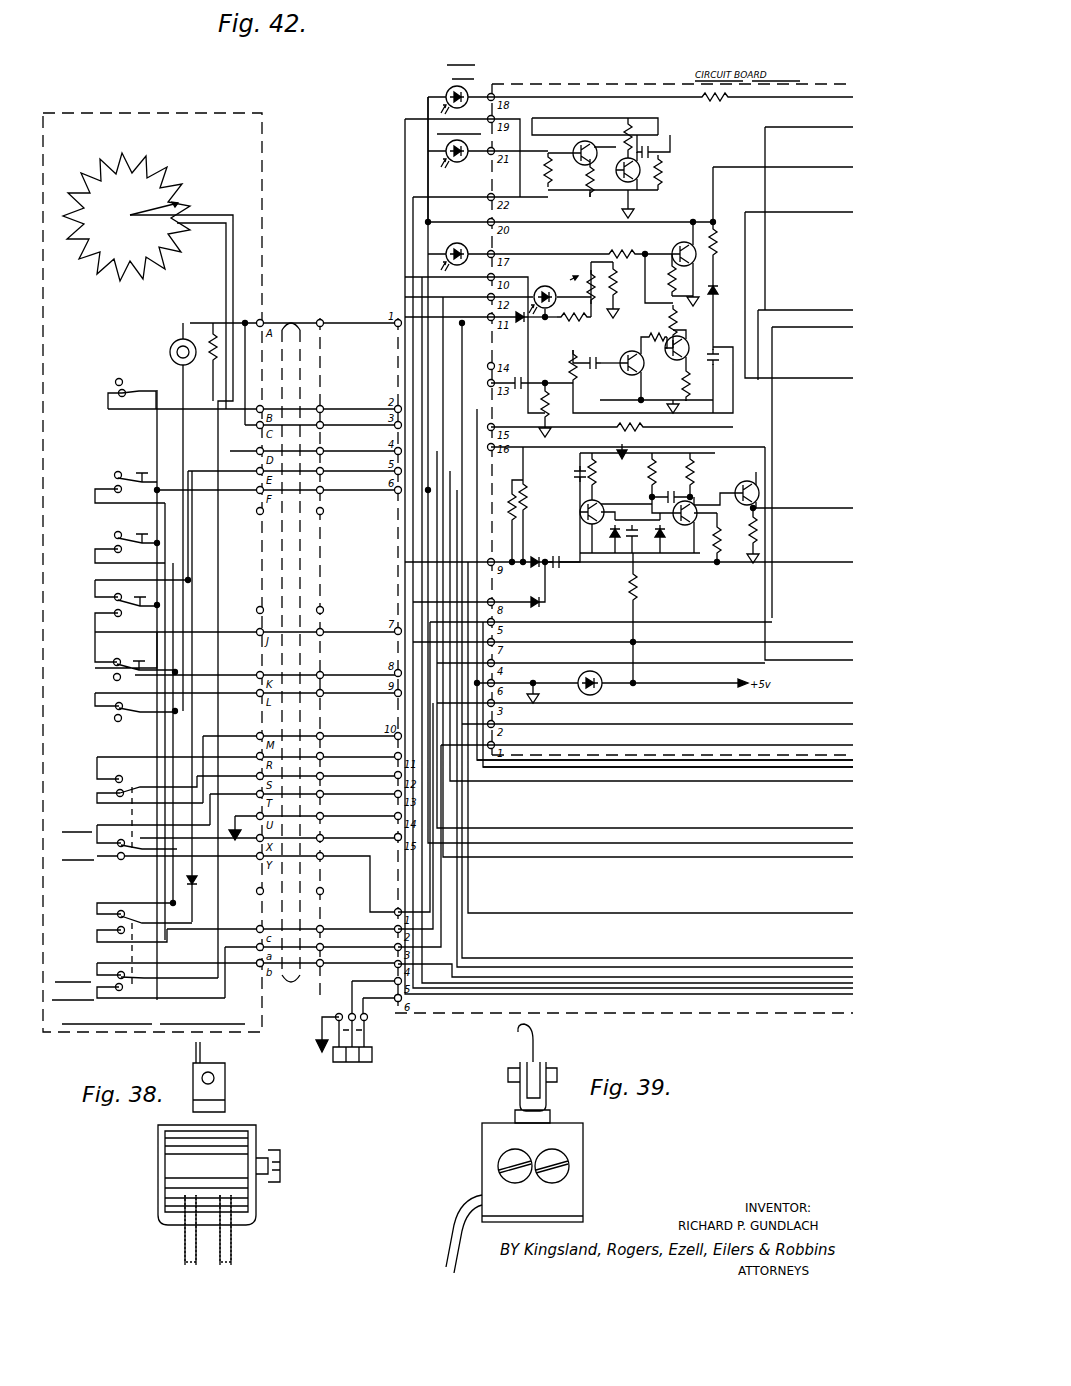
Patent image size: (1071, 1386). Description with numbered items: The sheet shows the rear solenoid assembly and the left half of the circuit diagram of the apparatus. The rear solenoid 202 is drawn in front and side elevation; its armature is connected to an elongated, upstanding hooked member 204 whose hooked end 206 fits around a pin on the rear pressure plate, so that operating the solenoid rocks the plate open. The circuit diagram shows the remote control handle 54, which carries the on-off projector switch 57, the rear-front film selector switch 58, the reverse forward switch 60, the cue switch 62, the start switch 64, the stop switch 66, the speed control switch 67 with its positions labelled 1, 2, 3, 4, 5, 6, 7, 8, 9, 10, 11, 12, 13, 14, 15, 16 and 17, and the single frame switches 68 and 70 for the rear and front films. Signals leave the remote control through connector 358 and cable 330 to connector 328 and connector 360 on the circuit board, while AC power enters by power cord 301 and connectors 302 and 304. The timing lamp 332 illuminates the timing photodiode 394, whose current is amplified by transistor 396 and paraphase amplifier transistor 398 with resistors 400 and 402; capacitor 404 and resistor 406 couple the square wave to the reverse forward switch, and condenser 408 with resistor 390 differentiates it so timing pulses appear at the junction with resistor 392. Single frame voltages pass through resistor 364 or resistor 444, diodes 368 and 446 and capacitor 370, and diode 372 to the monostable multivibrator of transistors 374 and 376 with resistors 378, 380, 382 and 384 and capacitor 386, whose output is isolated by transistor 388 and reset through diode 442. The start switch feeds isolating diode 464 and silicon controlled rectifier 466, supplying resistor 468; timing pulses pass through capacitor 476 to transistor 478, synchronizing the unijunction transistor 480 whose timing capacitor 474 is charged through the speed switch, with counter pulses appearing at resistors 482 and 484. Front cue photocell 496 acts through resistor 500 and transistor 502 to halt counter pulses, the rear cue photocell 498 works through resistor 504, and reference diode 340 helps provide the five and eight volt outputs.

In FIG. 42, the wheel contact 1 is at (185, 198).
In FIG. 42, the wheel contact 2 is at (175, 182).
In FIG. 42, the wheel contact 3 is at (158, 160).
In FIG. 42, the wheel contact 4 is at (144, 156).
In FIG. 42, the wheel contact 5 is at (118, 155).
In FIG. 42, the wheel contact 6 is at (100, 160).
In FIG. 42, the wheel contact 7 is at (78, 178).
In FIG. 42, the wheel contact 8 is at (68, 194).
In FIG. 42, the wheel contact 9 is at (67, 220).
In FIG. 42, the wheel contact 10 is at (70, 244).
In FIG. 42, the wheel contact 11 is at (82, 262).
In FIG. 42, the wheel contact 12 is at (100, 275).
In FIG. 42, the wheel contact 13 is at (118, 282).
In FIG. 42, the wheel contact 14 is at (142, 280).
In FIG. 42, the wheel contact 15 is at (164, 272).
In FIG. 42, the wheel contact 16 is at (178, 254).
In FIG. 42, the wheel contact 17 is at (190, 234).
In FIG. 42, the speed control switch 67 is at (166, 150).
In FIG. 42, the timing lamp 332 is at (168, 342).
In FIG. 42, the cue switch 62 is at (131, 392).
In FIG. 42, the single front switch 70 is at (115, 476).
In FIG. 42, the single rear switch 68 is at (112, 548).
In FIG. 42, the start switch 64 is at (125, 610).
In FIG. 42, the stop switch 66 is at (125, 672).
In FIG. 42, the on-off projector switch 57 is at (128, 714).
In FIG. 42, the reverse forward switch 60 is at (132, 860).
In FIG. 42, the rear-front film selector switch 58 is at (125, 954).
In FIG. 42, the remote control handle 54 is at (232, 1000).
In FIG. 42, the connector 358 is at (257, 968).
In FIG. 42, the cable 330 is at (286, 978).
In FIG. 42, the connector 302 is at (350, 1012).
In FIG. 42, the power cord 301 is at (374, 1048).
In FIG. 42, the connector 304 is at (406, 1004).
In FIG. 42, the connector 328 is at (398, 848).
In FIG. 42, the connector 360 is at (492, 758).
In FIG. 42, the reference diode 340 is at (604, 688).
In FIG. 42, the rear cue photocell 498 is at (446, 92).
In FIG. 42, the resistor 504 is at (726, 102).
In FIG. 42, the timing photodiode 394 is at (466, 162).
In FIG. 42, the front cue photocell 496 is at (470, 250).
In FIG. 42, the amplifier transistor 396 is at (603, 155).
In FIG. 42, the resistor 400 is at (626, 132).
In FIG. 42, the resistor 402 is at (629, 162).
In FIG. 42, the paraphase amplifier transistor 398 is at (578, 177).
In FIG. 42, the capacitor 404 is at (655, 148).
In FIG. 42, the resistor 406 is at (660, 192).
In FIG. 42, the resistor 500 is at (608, 252).
In FIG. 42, the amplifier transistor 502 is at (692, 236).
In FIG. 42, the timing capacitor 474 is at (718, 356).
In FIG. 42, the silicon controlled rectifier 466 is at (571, 289).
In FIG. 42, the isolating diode 464 is at (524, 323).
In FIG. 42, the resistor 468 is at (606, 310).
In FIG. 42, the resistor 392 is at (573, 372).
In FIG. 42, the capacitor 476 is at (604, 355).
In FIG. 42, the amplifier transistor 478 is at (643, 360).
In FIG. 42, the unijunction transistor 480 is at (682, 336).
In FIG. 42, the resistor 482 is at (684, 392).
In FIG. 42, the resistor 484 is at (658, 408).
In FIG. 42, the condenser 408 is at (528, 389).
In FIG. 42, the resistor 390 is at (538, 415).
In FIG. 42, the resistor 444 is at (528, 492).
In FIG. 42, the resistor 364 is at (527, 505).
In FIG. 42, the diode 368 is at (538, 558).
In FIG. 42, the capacitor 370 is at (558, 570).
In FIG. 42, the diode 446 is at (542, 606).
In FIG. 42, the resistor 378 is at (598, 472).
In FIG. 42, the transistor 374 is at (640, 526).
In FIG. 42, the resistor 380 is at (652, 478).
In FIG. 42, the resistor 382 is at (690, 470).
In FIG. 42, the capacitor 386 is at (672, 487).
In FIG. 42, the transistor 376 is at (745, 512).
In FIG. 42, the transistor 388 is at (739, 485).
In FIG. 42, the resistor 384 is at (718, 540).
In FIG. 42, the diode 442 is at (664, 536).
In FIG. 42, the diode 372 is at (630, 570).
In FIG. 38, the hooked member 204 is at (218, 1050).
In FIG. 39, the hooked member 204 is at (542, 1060).
In FIG. 38, the rear solenoid 202 is at (265, 1140).
In FIG. 39, the rear solenoid 202 is at (590, 1150).
In FIG. 39, the hooked end 206 is at (540, 1030).